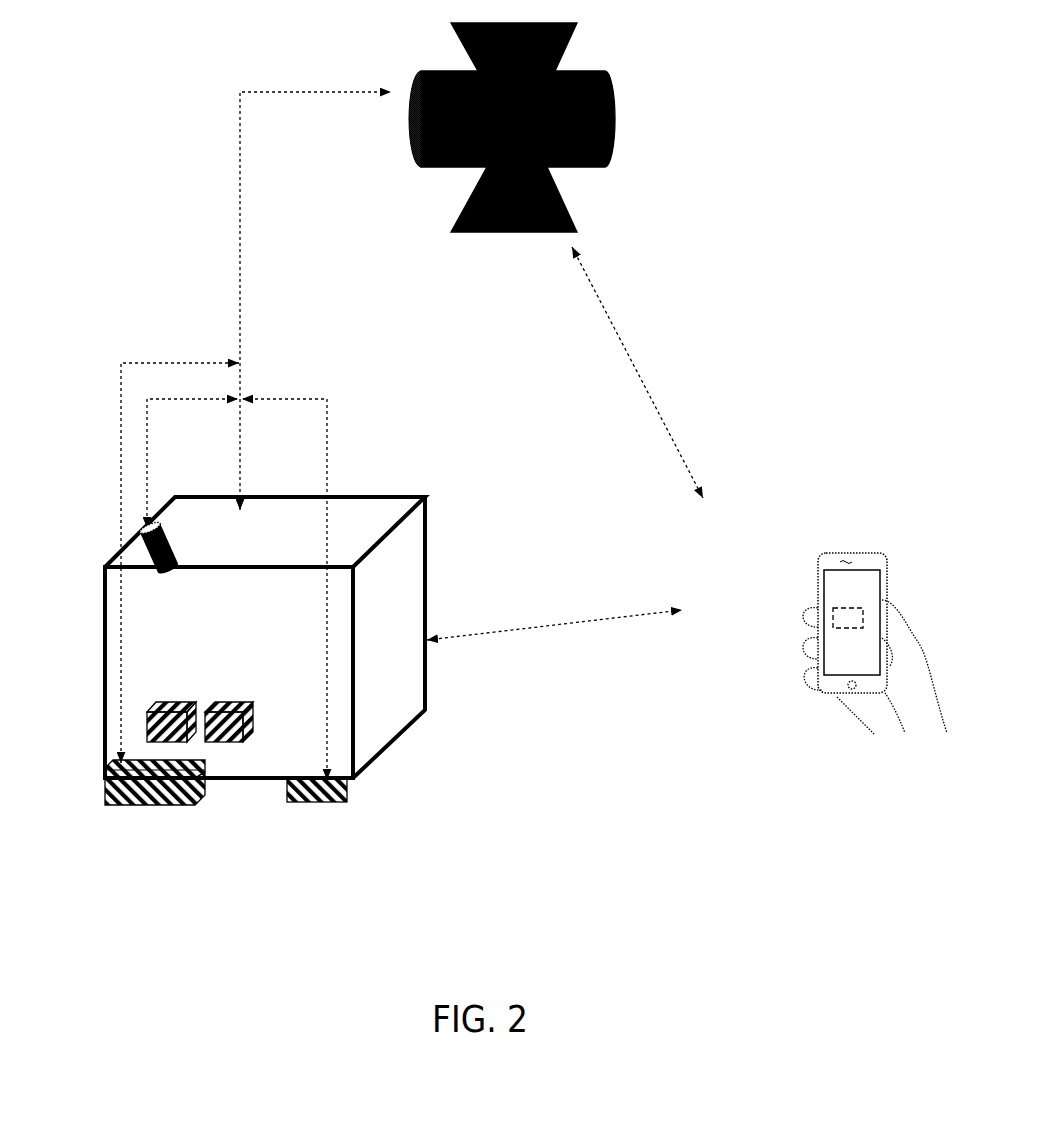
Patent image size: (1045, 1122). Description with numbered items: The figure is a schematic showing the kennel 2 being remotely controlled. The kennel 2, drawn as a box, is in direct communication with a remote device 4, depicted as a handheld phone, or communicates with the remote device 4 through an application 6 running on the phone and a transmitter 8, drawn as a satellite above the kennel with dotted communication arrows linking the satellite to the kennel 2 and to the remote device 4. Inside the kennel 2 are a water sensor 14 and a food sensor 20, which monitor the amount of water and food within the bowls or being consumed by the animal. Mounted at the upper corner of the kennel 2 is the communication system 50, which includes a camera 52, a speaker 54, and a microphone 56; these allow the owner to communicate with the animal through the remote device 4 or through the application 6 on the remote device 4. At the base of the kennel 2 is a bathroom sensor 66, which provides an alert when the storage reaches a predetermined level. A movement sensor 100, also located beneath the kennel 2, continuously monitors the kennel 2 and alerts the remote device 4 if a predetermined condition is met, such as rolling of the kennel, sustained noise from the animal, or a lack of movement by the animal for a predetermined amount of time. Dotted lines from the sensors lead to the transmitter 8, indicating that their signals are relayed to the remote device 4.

The kennel 2 is at (103, 451).
The remote device 4 is at (833, 573).
The application 6 is at (830, 592).
The transmitter 8 is at (657, 98).
The water sensor 14 is at (169, 702).
The food sensor 20 is at (237, 702).
The communication system 50 is at (163, 537).
The camera 52 is at (219, 534).
The speaker 54 is at (219, 534).
The microphone 56 is at (181, 549).
The bathroom sensor 66 is at (163, 814).
The movement sensor 100 is at (325, 803).